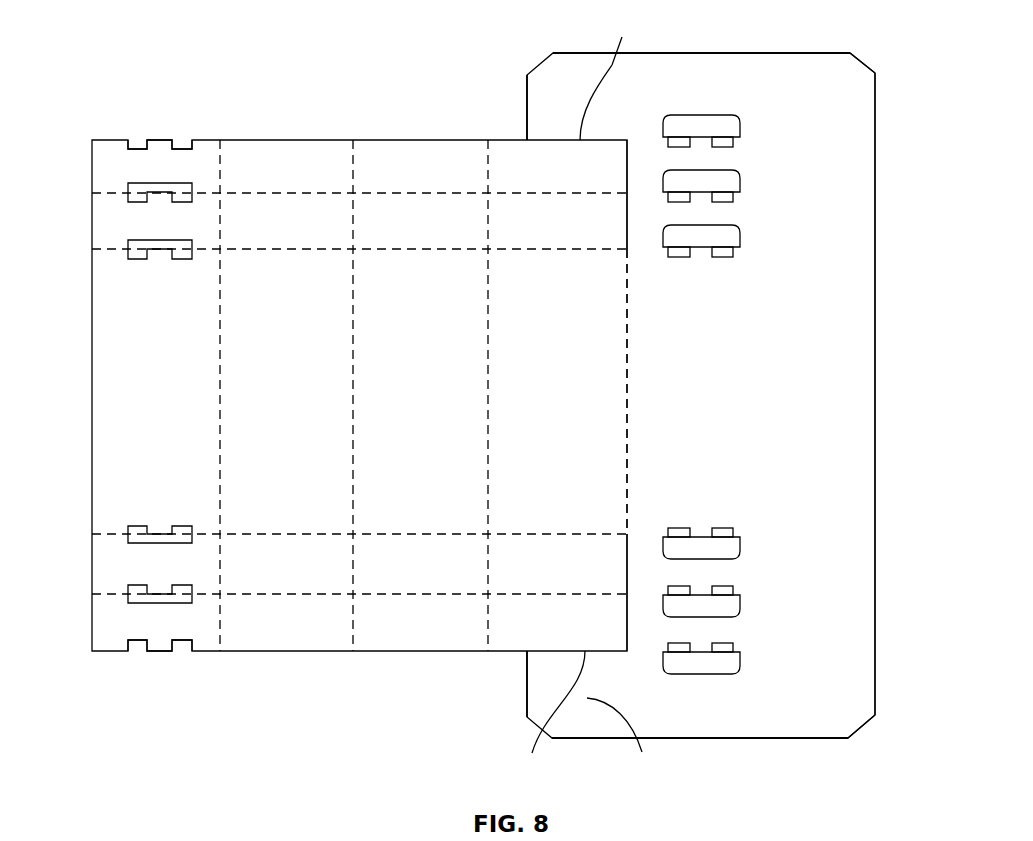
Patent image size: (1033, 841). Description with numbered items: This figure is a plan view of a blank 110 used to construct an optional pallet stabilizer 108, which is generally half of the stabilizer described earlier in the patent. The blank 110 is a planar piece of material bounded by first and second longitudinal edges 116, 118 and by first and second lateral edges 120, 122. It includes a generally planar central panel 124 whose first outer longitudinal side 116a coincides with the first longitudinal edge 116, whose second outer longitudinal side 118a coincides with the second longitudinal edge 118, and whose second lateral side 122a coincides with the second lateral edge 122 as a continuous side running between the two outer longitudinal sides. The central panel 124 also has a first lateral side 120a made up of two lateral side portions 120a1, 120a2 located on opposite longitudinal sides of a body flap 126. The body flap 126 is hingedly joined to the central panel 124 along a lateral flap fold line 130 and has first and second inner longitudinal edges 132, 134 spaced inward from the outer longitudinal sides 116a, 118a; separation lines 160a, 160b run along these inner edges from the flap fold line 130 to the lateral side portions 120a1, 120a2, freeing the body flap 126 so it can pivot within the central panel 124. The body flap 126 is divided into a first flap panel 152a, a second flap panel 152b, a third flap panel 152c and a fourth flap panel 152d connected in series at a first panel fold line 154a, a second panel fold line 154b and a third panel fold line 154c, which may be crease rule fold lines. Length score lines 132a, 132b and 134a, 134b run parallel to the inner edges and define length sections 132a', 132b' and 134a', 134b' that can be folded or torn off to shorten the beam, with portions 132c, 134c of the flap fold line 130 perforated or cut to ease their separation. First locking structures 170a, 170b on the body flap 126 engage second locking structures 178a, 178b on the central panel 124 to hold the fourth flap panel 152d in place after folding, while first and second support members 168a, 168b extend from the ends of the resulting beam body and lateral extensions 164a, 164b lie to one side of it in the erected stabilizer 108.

The pallet stabilizer 108 is at (413, 840).
The blank 110 is at (173, 33).
The first longitudinal edge 116 is at (593, 742).
The first outer longitudinal side 116a is at (763, 738).
The second longitudinal edge 118 is at (665, 52).
The second outer longitudinal side 118a is at (762, 53).
The first lateral edge 120 is at (92, 402).
The first lateral side 120a is at (527, 75).
The lateral side portion 120a1 is at (527, 115).
The lateral side portion 120a2 is at (527, 678).
The second lateral edge 122 is at (876, 450).
The second lateral side 122a is at (876, 350).
The central panel 124 is at (757, 400).
The body flap 126 is at (292, 630).
The lateral flap fold line 130 is at (627, 415).
The first inner longitudinal edge 132 is at (383, 653).
The length score line 132a is at (359, 570).
The length score line 132b is at (359, 510).
The portion of the lateral flap fold line 132c is at (627, 558).
The length section 132a' is at (420, 622).
The length section 132b' is at (420, 564).
The second inner longitudinal edge 134 is at (353, 140).
The length score line 134a is at (359, 220).
The length score line 134b is at (359, 280).
The portion of the lateral flap fold line 134c is at (627, 233).
The length section 134a' is at (420, 166).
The length section 134b' is at (420, 221).
The first flap panel 152a is at (592, 400).
The second flap panel 152b is at (455, 400).
The third flap panel 152c is at (320, 400).
The fourth flap panel 152d is at (187, 400).
The first panel fold line 154a is at (488, 415).
The second panel fold line 154b is at (353, 415).
The third panel fold line 154c is at (220, 415).
The separation line 160a is at (546, 718).
The separation line 160b is at (616, 77).
The lateral extension 164a is at (629, 741).
The lateral extension 164b is at (585, 87).
The first support member 168a is at (820, 712).
The second support member 168b is at (808, 72).
The first locking structure 170a is at (125, 542).
The first locking structure 170b is at (125, 245).
The second locking structure 178a is at (743, 548).
The second locking structure 178b is at (743, 133).